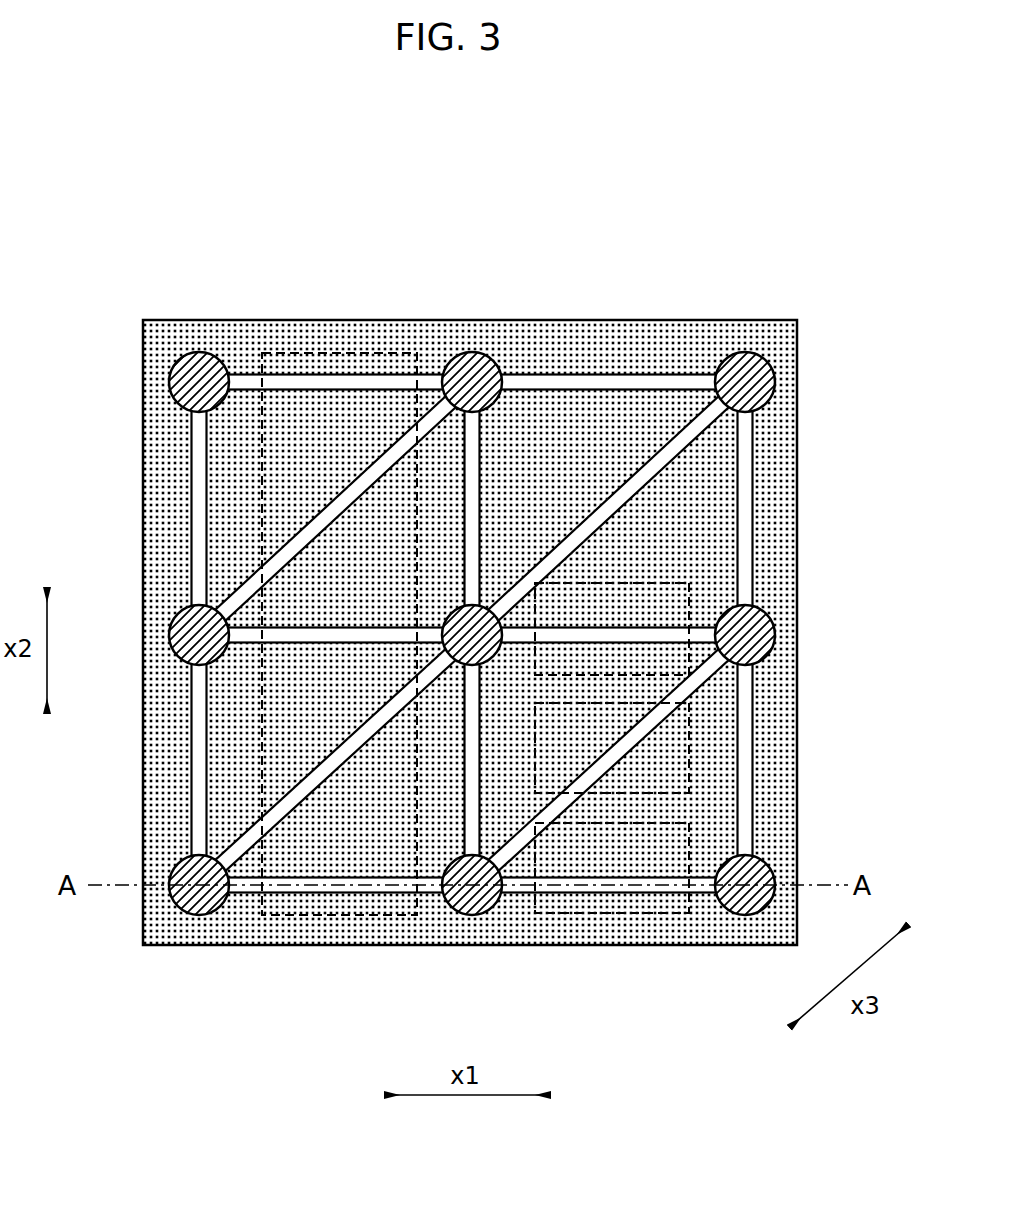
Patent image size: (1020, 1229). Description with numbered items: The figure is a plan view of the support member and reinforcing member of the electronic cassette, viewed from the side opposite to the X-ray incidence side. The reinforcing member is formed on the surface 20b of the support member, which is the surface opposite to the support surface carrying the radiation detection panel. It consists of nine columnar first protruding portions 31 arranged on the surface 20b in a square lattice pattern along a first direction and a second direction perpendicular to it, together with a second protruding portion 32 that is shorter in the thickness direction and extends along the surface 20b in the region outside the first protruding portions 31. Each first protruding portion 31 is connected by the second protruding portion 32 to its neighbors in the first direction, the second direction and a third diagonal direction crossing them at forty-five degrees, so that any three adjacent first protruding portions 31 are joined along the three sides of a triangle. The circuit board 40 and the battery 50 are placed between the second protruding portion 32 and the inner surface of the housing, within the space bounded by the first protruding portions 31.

The surface 20b is at (785, 503).
The first protruding portion 31 is at (731, 378).
The second protruding portion 32 is at (390, 384).
The circuit board 40 is at (311, 350).
The battery 50 is at (690, 843).